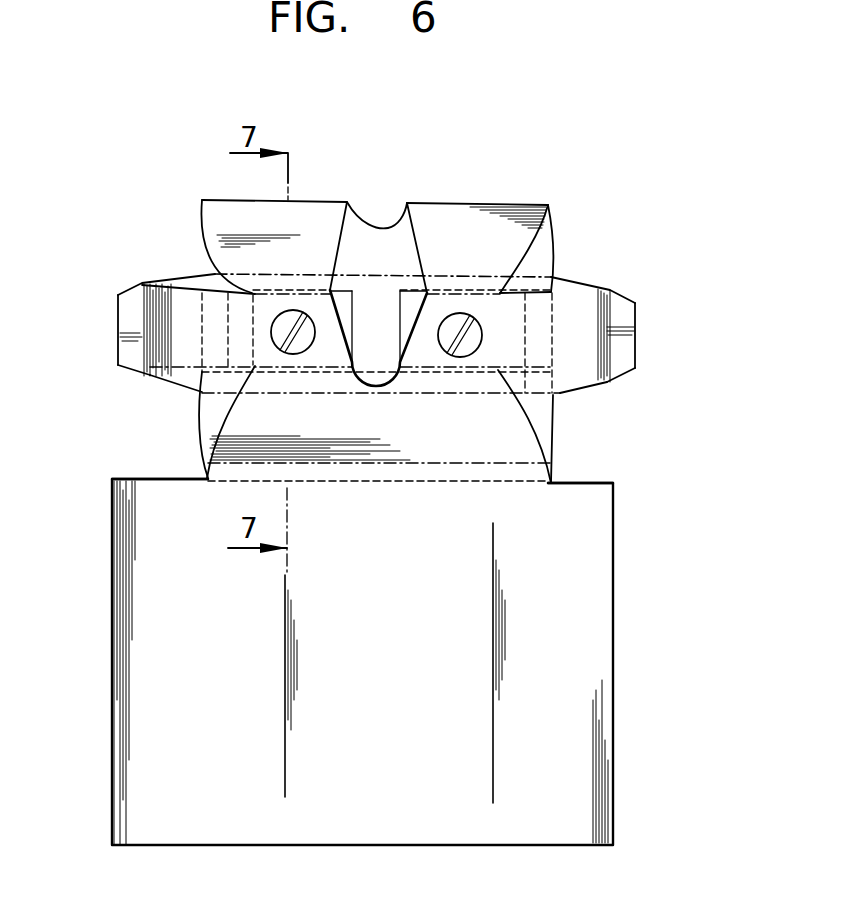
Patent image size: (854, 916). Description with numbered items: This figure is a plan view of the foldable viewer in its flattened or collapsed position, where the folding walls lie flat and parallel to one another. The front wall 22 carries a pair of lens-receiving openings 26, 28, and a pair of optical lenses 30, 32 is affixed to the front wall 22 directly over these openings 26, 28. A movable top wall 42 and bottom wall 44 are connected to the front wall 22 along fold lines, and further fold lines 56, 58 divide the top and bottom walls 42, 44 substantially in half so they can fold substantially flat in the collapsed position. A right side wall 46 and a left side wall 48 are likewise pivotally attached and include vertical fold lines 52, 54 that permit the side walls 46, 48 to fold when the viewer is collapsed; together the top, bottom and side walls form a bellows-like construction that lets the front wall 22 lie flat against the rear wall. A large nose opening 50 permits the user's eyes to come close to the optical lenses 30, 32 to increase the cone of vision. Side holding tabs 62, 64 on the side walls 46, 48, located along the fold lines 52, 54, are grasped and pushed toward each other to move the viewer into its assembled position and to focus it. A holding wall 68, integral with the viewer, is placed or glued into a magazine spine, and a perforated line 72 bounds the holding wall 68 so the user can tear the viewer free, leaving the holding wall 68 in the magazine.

The front wall 22 is at (485, 360).
The lens-receiving opening 26 is at (448, 337).
The lens-receiving opening 28 is at (313, 340).
The optical lens 30 is at (277, 337).
The optical lens 32 is at (473, 330).
The top wall 42 is at (208, 448).
The bottom wall 44 is at (517, 235).
The right side wall 46 is at (170, 362).
The left side wall 48 is at (582, 350).
The nose opening 50 is at (390, 226).
The fold line 52 is at (138, 308).
The fold line 54 is at (633, 368).
The fold line 56 is at (377, 463).
The fold line 58 is at (517, 202).
The side holding tab 62 is at (132, 295).
The side holding tab 64 is at (628, 305).
The holding wall 68 is at (577, 558).
The perforated line 72 is at (450, 485).